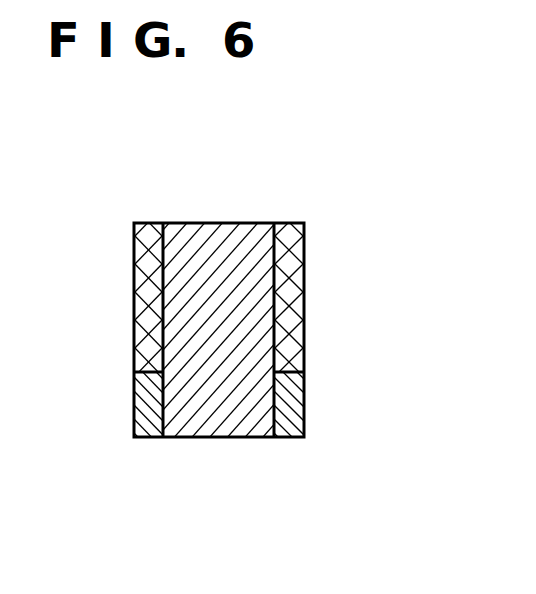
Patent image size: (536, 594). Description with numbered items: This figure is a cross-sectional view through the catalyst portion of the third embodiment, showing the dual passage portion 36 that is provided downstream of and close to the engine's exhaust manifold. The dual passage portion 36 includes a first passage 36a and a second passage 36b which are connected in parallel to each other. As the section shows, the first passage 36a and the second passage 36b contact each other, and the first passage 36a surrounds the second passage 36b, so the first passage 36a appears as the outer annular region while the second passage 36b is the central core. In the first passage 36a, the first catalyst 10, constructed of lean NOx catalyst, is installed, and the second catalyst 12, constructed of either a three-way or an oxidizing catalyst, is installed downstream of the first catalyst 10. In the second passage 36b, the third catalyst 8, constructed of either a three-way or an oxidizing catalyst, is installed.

The third catalyst 8 is at (205, 378).
The first catalyst 10 is at (143, 235).
The second catalyst 12 is at (147, 413).
The dual passage portion 36 is at (128, 300).
The first passage 36a is at (293, 268).
The second passage 36b is at (242, 345).